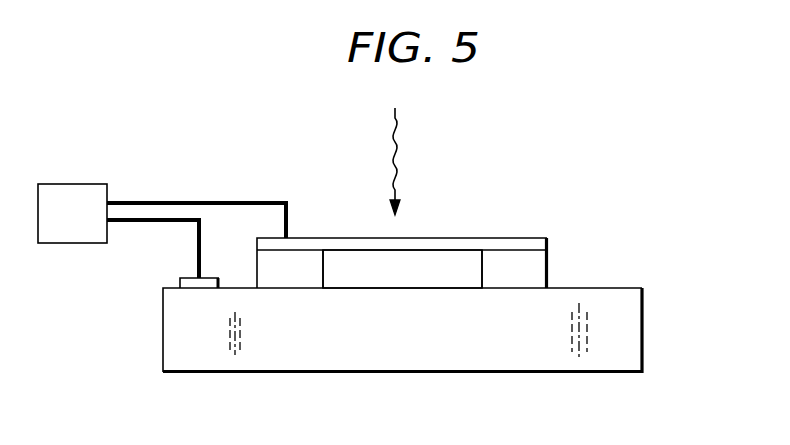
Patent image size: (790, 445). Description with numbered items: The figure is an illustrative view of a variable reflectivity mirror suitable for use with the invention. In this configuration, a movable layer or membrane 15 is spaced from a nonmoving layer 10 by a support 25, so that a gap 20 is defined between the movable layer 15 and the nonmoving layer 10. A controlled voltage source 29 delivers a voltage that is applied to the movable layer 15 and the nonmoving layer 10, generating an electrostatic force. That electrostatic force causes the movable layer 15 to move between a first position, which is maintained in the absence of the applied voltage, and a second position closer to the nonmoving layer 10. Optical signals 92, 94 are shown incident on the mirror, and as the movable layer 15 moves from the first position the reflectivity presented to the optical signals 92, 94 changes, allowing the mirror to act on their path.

The nonmoving layer 10 is at (383, 346).
The movable layer 15 is at (321, 240).
The gap 20 is at (383, 280).
The support 25 is at (276, 280).
The controlled voltage source 29 is at (60, 225).
The optical signal 92 is at (426, 160).
The optical signal 94 is at (426, 160).